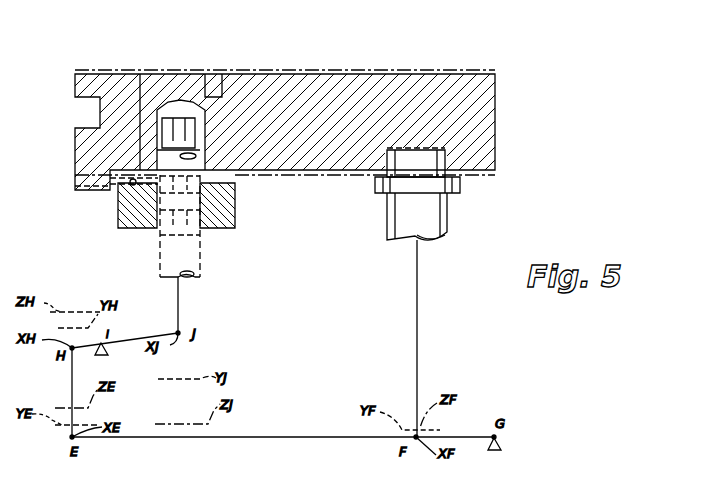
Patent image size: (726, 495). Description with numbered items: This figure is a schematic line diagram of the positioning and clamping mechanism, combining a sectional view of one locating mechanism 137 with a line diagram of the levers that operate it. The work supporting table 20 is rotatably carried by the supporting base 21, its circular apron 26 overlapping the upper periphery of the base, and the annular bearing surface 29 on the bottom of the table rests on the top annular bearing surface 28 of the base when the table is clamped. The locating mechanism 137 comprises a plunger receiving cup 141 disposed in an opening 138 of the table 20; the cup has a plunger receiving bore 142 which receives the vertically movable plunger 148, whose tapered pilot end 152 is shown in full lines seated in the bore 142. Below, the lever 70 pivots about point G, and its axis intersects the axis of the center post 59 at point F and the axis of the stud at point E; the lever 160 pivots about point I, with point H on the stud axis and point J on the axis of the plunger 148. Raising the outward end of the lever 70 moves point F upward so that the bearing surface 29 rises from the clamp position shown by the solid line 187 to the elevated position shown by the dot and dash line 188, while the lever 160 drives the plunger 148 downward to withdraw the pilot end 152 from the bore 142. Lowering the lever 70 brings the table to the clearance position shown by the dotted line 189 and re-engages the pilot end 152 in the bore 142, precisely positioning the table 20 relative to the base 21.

The work supporting table 20 is at (478, 93).
The supporting base 21 is at (123, 214).
The circular apron 26 is at (84, 176).
The top annular bearing surface 28 is at (121, 181).
The annular bearing surface 29 is at (133, 179).
The center post 59 is at (458, 208).
The lever 70 is at (272, 448).
The locating mechanism 137 is at (200, 40).
The opening 138 is at (212, 137).
The plunger receiving cup 141 is at (153, 78).
The plunger receiving bore 142 is at (202, 110).
The plunger 148 is at (193, 148).
The pilot end 152 is at (167, 128).
The lever 160 is at (143, 312).
The solid line 187 is at (316, 173).
The dot and dash line 188 is at (351, 163).
The dotted line 189 is at (302, 175).